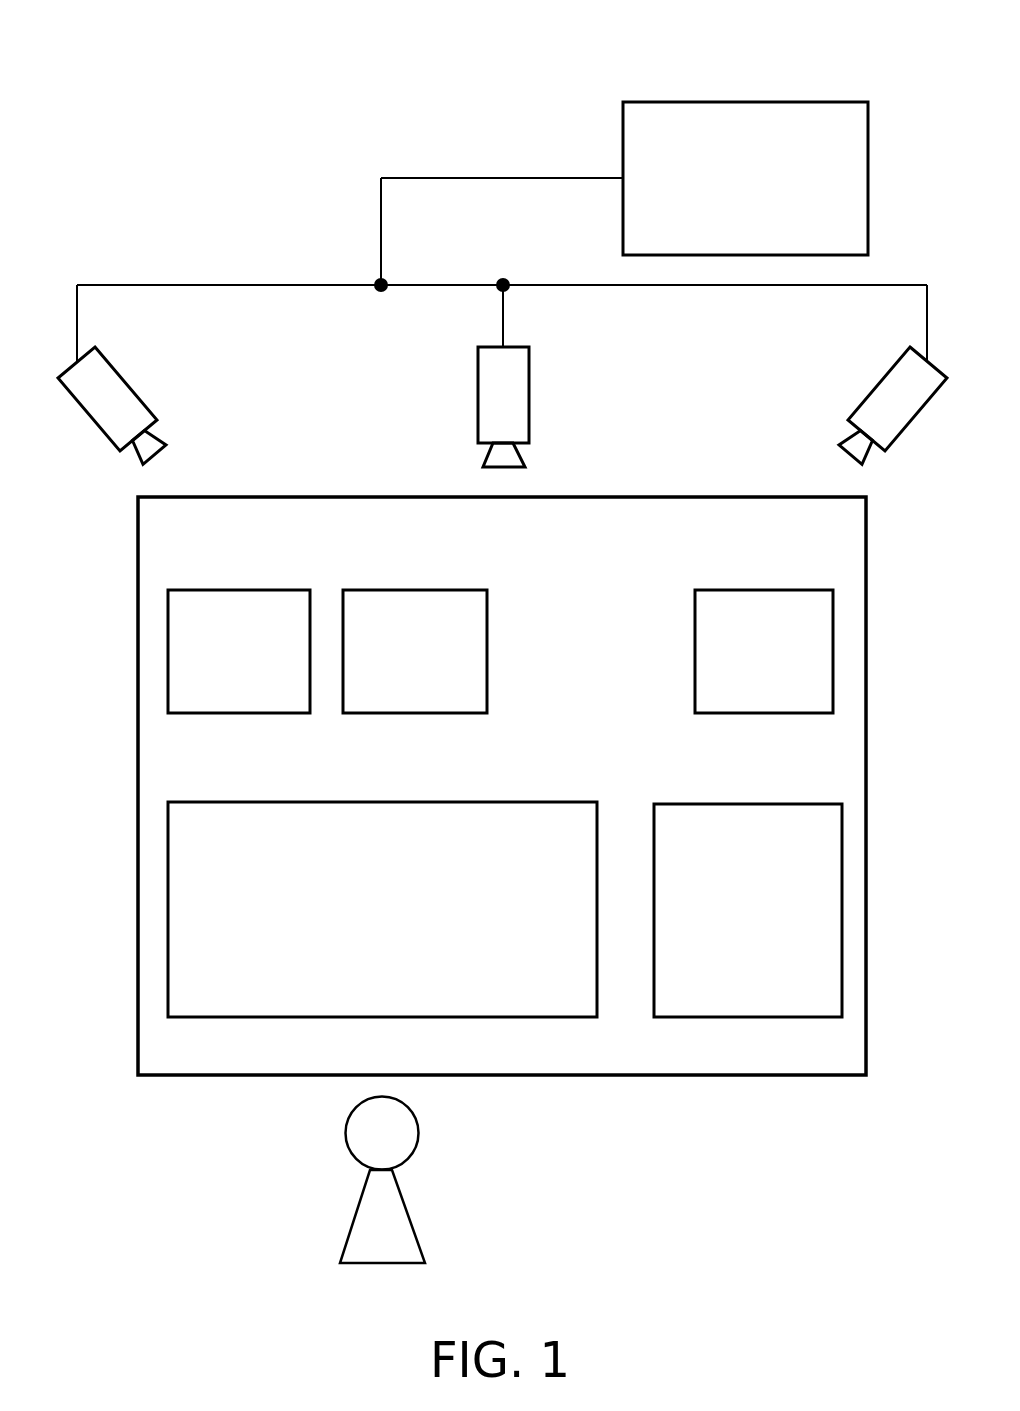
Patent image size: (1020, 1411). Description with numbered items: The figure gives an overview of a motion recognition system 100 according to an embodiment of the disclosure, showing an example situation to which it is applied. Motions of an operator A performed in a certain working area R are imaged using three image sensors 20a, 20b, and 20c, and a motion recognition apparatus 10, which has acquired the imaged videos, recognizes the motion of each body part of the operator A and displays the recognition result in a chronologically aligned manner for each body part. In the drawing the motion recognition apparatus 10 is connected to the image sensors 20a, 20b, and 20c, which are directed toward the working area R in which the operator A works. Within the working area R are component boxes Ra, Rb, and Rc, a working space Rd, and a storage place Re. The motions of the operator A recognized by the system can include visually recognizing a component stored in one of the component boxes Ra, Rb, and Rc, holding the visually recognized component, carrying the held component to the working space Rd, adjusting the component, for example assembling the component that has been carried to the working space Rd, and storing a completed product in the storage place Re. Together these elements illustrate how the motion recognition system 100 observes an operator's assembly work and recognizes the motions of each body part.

The motion recognition system 100 is at (494, 78).
The motion recognition apparatus 10 is at (747, 102).
The image sensor 20a is at (129, 385).
The image sensor 20b is at (530, 392).
The image sensor 20c is at (877, 385).
The working area R is at (745, 1077).
The component box Ra is at (255, 590).
The component box Rb is at (427, 590).
The component box Rc is at (768, 590).
The working space Rd is at (395, 802).
The storage place Re is at (751, 804).
The operator A is at (420, 1133).